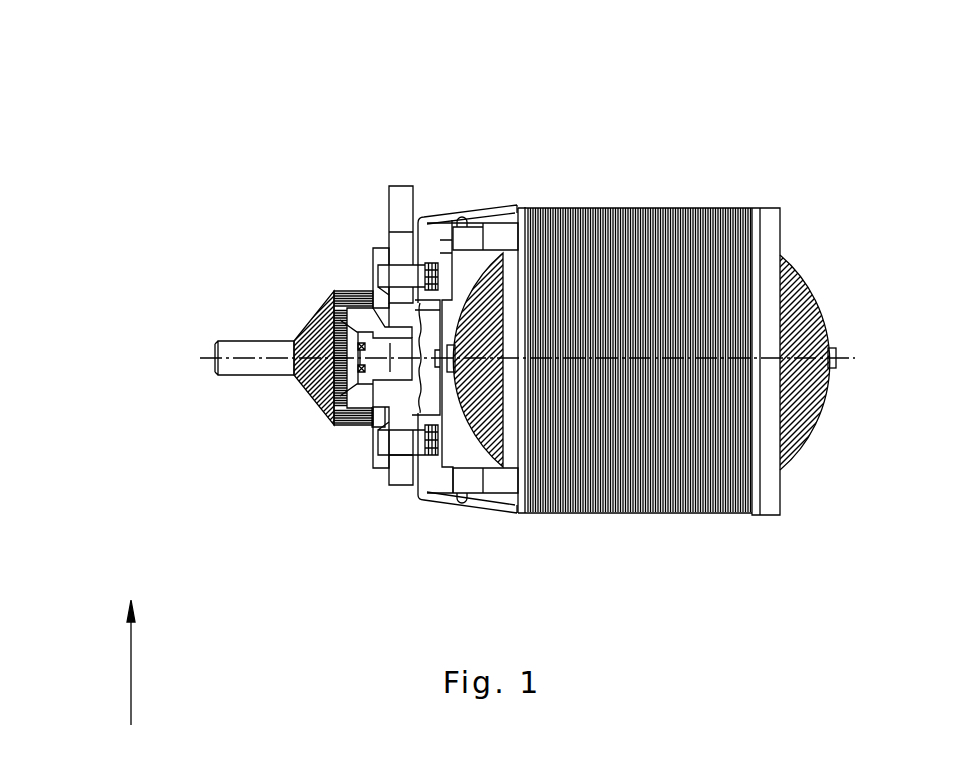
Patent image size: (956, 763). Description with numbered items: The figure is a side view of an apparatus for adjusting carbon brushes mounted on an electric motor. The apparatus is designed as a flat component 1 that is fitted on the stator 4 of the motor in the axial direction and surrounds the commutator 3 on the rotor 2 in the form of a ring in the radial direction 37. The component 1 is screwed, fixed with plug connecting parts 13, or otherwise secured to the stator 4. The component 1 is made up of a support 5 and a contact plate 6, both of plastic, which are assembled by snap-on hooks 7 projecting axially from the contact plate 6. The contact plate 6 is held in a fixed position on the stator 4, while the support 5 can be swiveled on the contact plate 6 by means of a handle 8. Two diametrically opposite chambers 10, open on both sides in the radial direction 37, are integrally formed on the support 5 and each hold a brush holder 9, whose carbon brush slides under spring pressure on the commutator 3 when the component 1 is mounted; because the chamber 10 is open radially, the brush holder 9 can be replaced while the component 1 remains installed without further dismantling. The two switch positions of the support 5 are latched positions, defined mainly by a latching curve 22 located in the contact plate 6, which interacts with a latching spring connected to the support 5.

The flat component 1 is at (383, 323).
The rotor 2 is at (298, 377).
The commutator 3 is at (375, 307).
The stator 4 is at (623, 223).
The support 5 is at (400, 305).
The contact plate 6 is at (425, 490).
The snap-on hooks 7 is at (403, 270).
The handle 8 is at (400, 197).
The brush holder 9 is at (377, 355).
The chambers 10 is at (373, 395).
The plug connecting parts 13 is at (503, 203).
The latching curve 22 is at (422, 382).
The radial direction 37 is at (130, 673).